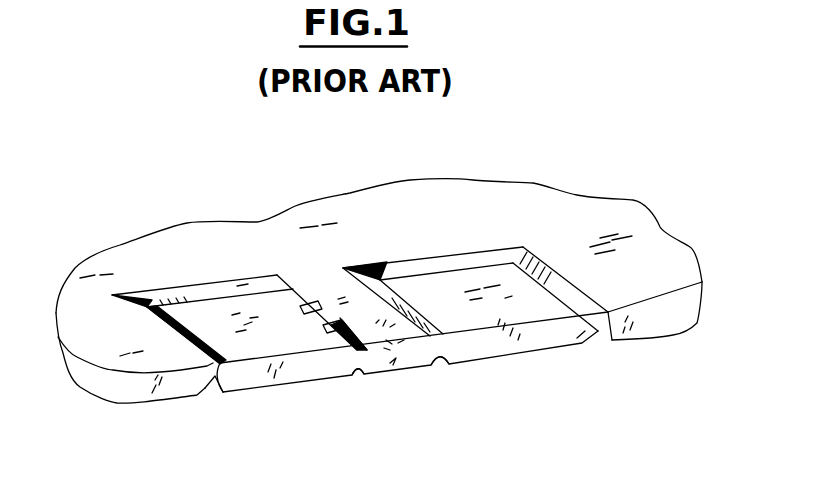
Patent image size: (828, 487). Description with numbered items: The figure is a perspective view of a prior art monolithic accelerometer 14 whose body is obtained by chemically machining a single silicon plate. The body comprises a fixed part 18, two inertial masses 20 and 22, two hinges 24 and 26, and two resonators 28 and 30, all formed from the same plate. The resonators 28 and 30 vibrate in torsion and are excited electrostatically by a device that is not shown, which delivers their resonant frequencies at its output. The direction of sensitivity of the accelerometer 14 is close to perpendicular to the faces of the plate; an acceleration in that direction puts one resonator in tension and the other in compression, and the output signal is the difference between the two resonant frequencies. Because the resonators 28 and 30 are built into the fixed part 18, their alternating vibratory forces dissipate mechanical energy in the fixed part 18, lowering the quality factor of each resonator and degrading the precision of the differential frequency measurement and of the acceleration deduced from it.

The accelerometer 14 is at (379, 257).
The fixed part 18 is at (371, 201).
The inertial mass 20 is at (190, 312).
The inertial mass 22 is at (468, 278).
The hinge 24 is at (441, 360).
The hinge 26 is at (358, 367).
The resonator 28 is at (313, 301).
The resonator 30 is at (398, 311).